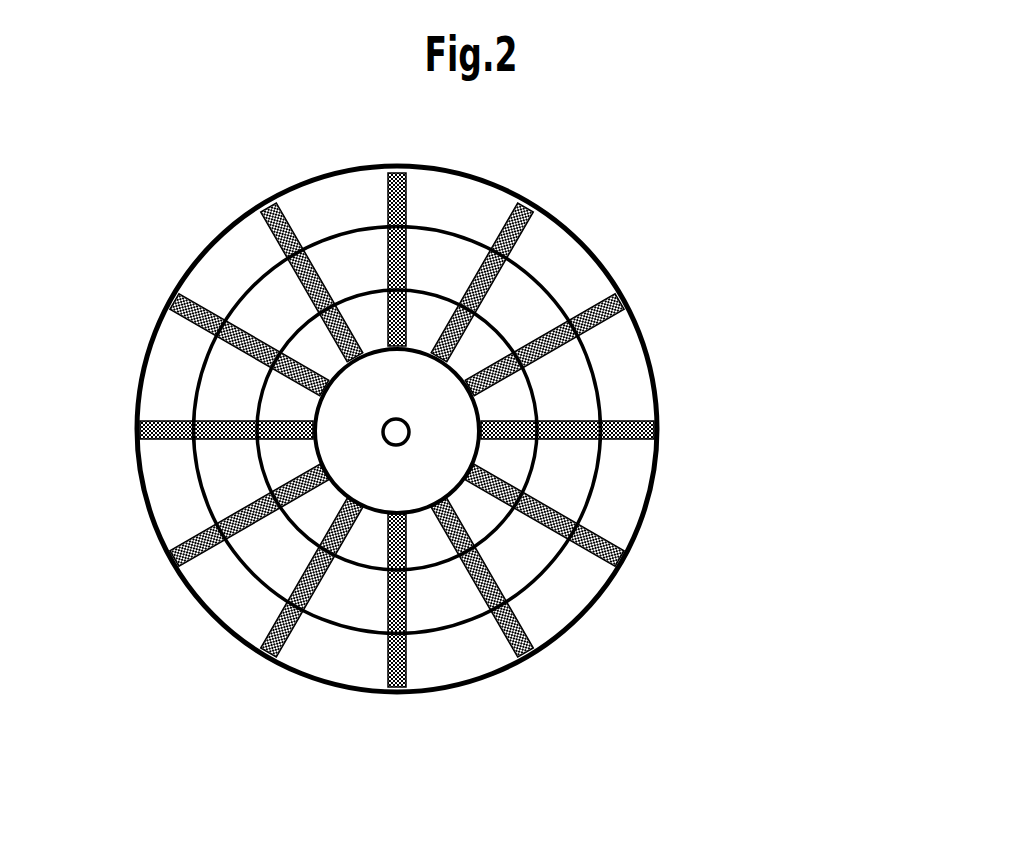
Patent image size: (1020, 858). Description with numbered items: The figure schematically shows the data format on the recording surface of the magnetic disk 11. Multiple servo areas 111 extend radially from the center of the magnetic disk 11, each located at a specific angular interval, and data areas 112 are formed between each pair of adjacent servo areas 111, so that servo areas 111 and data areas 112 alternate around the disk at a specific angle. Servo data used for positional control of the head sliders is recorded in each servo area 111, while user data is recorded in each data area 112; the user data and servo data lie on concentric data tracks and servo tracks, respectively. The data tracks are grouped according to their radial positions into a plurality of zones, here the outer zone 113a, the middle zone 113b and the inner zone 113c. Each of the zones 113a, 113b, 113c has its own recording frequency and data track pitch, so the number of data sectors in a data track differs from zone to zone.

The magnetic disk 11 is at (137, 388).
The servo area 111 is at (628, 293).
The data area 112 is at (550, 398).
The zone 113a is at (630, 483).
The zone 113b is at (523, 557).
The zone 113c is at (513, 400).